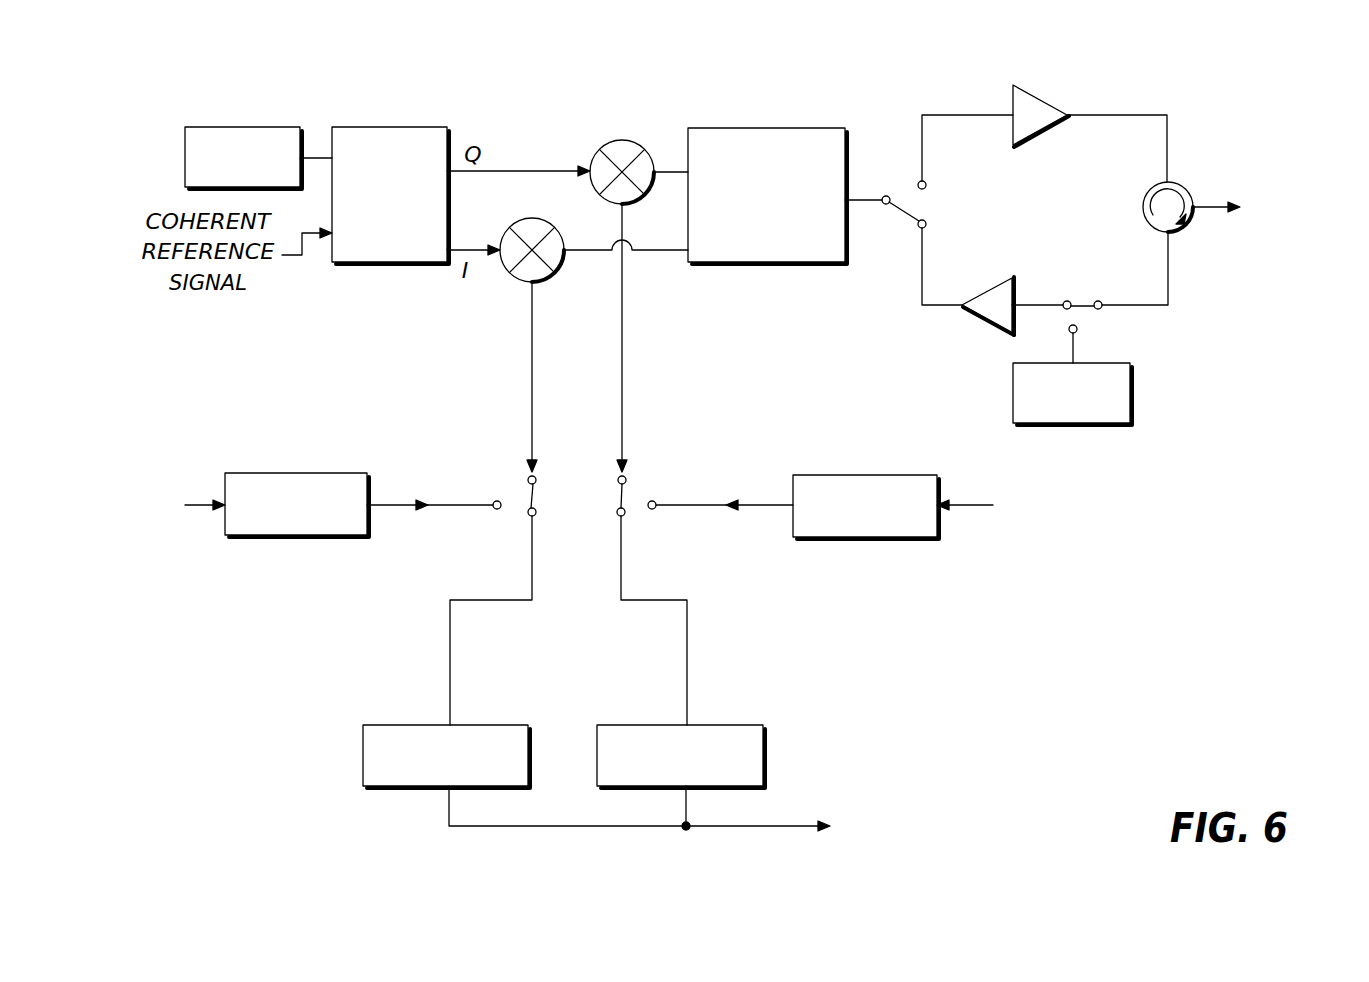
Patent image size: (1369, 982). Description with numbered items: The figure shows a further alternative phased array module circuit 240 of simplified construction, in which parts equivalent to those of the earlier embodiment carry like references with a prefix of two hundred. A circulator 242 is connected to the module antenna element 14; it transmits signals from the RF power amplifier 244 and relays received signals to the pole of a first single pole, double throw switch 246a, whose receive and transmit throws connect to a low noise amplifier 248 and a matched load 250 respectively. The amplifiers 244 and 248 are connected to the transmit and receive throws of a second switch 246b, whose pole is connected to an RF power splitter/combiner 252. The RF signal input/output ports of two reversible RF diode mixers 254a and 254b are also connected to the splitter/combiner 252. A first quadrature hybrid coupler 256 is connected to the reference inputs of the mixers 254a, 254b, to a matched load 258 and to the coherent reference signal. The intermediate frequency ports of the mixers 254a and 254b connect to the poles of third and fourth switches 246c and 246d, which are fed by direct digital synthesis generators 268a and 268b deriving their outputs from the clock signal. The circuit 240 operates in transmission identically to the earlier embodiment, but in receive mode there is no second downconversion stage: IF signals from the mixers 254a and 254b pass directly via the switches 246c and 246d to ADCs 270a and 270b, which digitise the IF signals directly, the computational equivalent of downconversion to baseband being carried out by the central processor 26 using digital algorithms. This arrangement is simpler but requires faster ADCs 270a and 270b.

The circuit 240 is at (346, 810).
The circulator 242 is at (1151, 194).
The RF power amplifier 244 is at (1040, 93).
The first SPDT switch 246a is at (1083, 297).
The second SPDT switch 246b is at (912, 202).
The third SPDT switch 246c is at (527, 500).
The fourth SPDT switch 246d is at (628, 500).
The low noise amplifier 248 is at (988, 326).
The matched load 250 is at (1130, 400).
The RF power splitter/combiner 252 is at (765, 128).
The RF diode mixer 254a is at (548, 282).
The RF diode mixer 254b is at (617, 140).
The first quadrature hybrid coupler 256 is at (400, 127).
The matched load 258 is at (256, 127).
The direct digital synthesis generator 268a is at (300, 535).
The direct digital synthesis generator 268b is at (865, 537).
The ADC 270a is at (363, 763).
The ADC 270b is at (770, 750).
The module antenna element 14 is at (1271, 211).
The central processor 26 is at (727, 821).